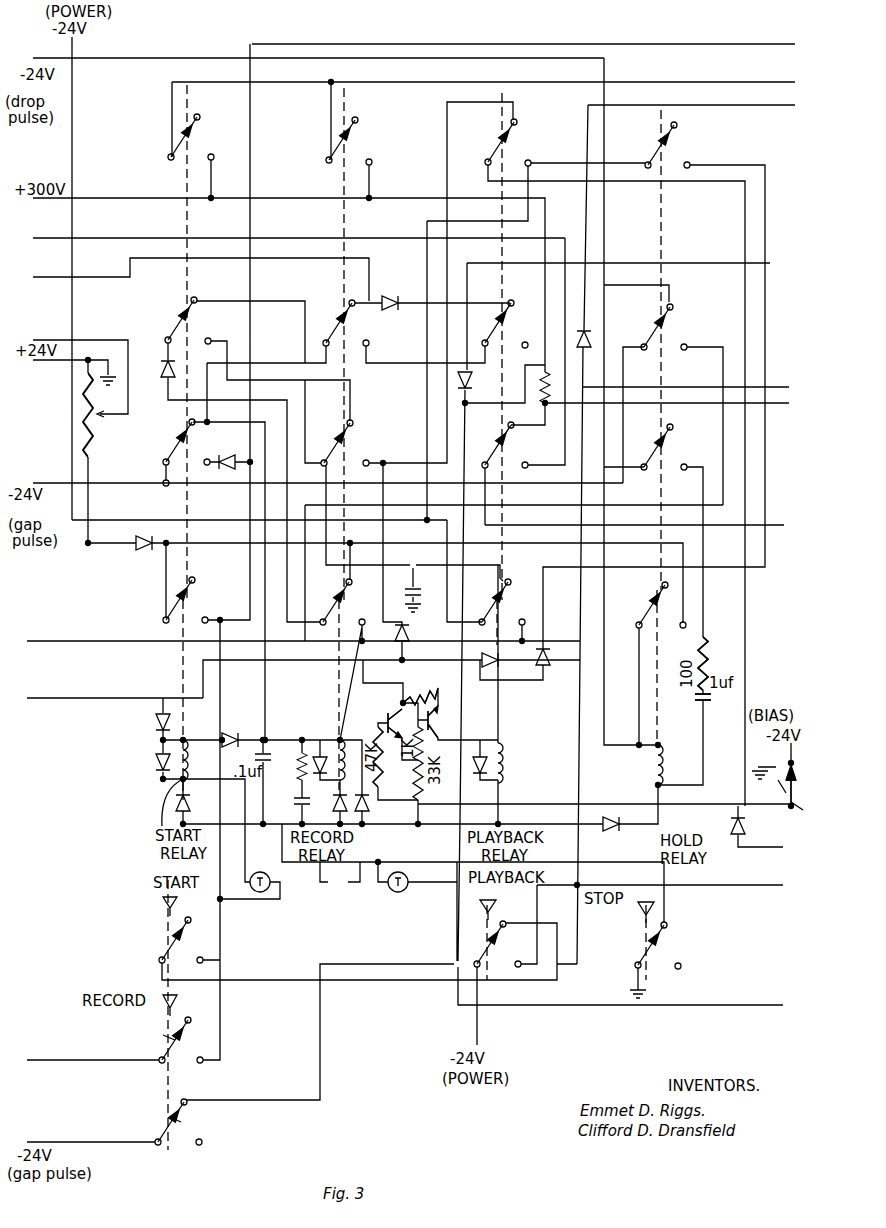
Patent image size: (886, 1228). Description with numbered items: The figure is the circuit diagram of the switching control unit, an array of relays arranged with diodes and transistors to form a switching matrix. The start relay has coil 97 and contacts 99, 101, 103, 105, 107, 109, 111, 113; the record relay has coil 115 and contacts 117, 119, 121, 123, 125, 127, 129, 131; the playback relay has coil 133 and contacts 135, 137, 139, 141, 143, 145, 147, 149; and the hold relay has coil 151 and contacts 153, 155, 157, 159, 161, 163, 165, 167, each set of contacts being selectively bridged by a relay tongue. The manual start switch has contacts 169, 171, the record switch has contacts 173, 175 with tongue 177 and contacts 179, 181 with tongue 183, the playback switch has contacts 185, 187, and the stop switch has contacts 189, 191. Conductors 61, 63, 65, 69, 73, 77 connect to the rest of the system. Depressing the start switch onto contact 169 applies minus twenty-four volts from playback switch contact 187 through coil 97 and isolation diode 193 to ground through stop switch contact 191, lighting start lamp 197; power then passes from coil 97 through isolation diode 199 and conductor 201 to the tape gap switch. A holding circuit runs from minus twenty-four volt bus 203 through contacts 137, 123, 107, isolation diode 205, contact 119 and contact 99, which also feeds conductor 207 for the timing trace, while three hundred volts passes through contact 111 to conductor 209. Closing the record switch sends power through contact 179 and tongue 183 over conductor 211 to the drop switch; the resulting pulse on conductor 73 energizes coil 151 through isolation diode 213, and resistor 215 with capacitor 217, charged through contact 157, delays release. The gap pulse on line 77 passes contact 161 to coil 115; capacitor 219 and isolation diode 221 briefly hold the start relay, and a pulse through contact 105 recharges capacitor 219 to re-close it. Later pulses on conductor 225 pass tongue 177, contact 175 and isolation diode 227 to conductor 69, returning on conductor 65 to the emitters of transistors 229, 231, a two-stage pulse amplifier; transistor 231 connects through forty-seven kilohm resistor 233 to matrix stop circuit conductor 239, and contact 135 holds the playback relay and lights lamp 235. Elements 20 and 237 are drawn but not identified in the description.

The conductor 73 is at (46, 56).
The conductor 207 is at (724, 51).
The conductor 209 is at (724, 89).
The conductor 69 is at (733, 105).
The start relay contact 113 is at (198, 125).
The start relay contact 111 is at (208, 157).
The record relay contact 131 is at (353, 126).
The record relay contact 129 is at (367, 155).
The playback relay contact 149 is at (512, 129).
The playback relay contact 147 is at (526, 159).
The hold relay contact 167 is at (672, 127).
The hold relay contact 165 is at (685, 158).
The lamp 235 is at (54, 242).
The conductor 61 is at (46, 276).
The conductor 63 is at (777, 264).
The conductor 65 is at (777, 388).
The conductor 237 is at (773, 520).
The start relay contact 109 is at (191, 299).
The start relay contact 107 is at (204, 337).
The isolation diode 205 is at (162, 375).
The start relay contact 105 is at (180, 422).
The start relay contact 103 is at (200, 460).
The record relay contact 127 is at (351, 322).
The record relay contact 125 is at (365, 340).
The playback relay contact 145 is at (511, 303).
The playback relay contact 143 is at (524, 343).
The hold relay contact 163 is at (668, 305).
The hold relay contact 161 is at (682, 343).
The isolation diode 227 is at (586, 328).
The record relay contact 123 is at (353, 421).
The record relay contact 121 is at (365, 461).
The 47K resistor 233 is at (475, 384).
The playback relay contact 141 is at (510, 421).
The playback relay contact 139 is at (524, 463).
The hold relay contact 159 is at (669, 426).
The hold relay contact 157 is at (683, 464).
The conductor 77 is at (44, 481).
The minus 24 volt bus 203 is at (117, 512).
The start relay contact 101 is at (187, 575).
The start relay contact 99 is at (201, 617).
The record relay contact 119 is at (348, 581).
The record relay contact 117 is at (360, 620).
The playback relay contact 137 is at (508, 581).
The playback relay contact 135 is at (521, 620).
The hold relay contact 155 is at (662, 586).
The hold relay contact 153 is at (680, 640).
The resistor 215 is at (704, 639).
The capacitor 217 is at (706, 707).
The conductor 201 is at (98, 700).
The isolation diode 199 is at (156, 722).
The start relay coil 97 is at (188, 764).
The isolation diode 221 is at (230, 735).
The capacitor 219 is at (264, 750).
The isolation diode 193 is at (186, 795).
The record relay coil 115 is at (346, 753).
The transistor 231 is at (388, 720).
The resistor 20 is at (419, 704).
The transistor 229 is at (438, 718).
The playback relay coil 133 is at (502, 756).
The hold relay coil 151 is at (660, 758).
The playback matrix stop circuit conductor 239 is at (744, 800).
The isolation diode 213 is at (606, 838).
The start lamp 197 is at (272, 873).
The start switch contact 171 is at (181, 910).
The start switch contact 169 is at (183, 951).
The record switch contact 181 is at (181, 1008).
The record switch tongue 183 is at (166, 1050).
The record switch contact 179 is at (183, 1052).
The conductor 211 is at (76, 1064).
The record switch contact 175 is at (187, 1098).
The record switch tongue 177 is at (176, 1124).
The record switch contact 173 is at (204, 1140).
The conductor 225 is at (88, 1136).
The playback switch contact 187 is at (502, 921).
The playback switch contact 185 is at (516, 982).
The stop switch contact 191 is at (668, 926).
The stop switch contact 189 is at (678, 967).